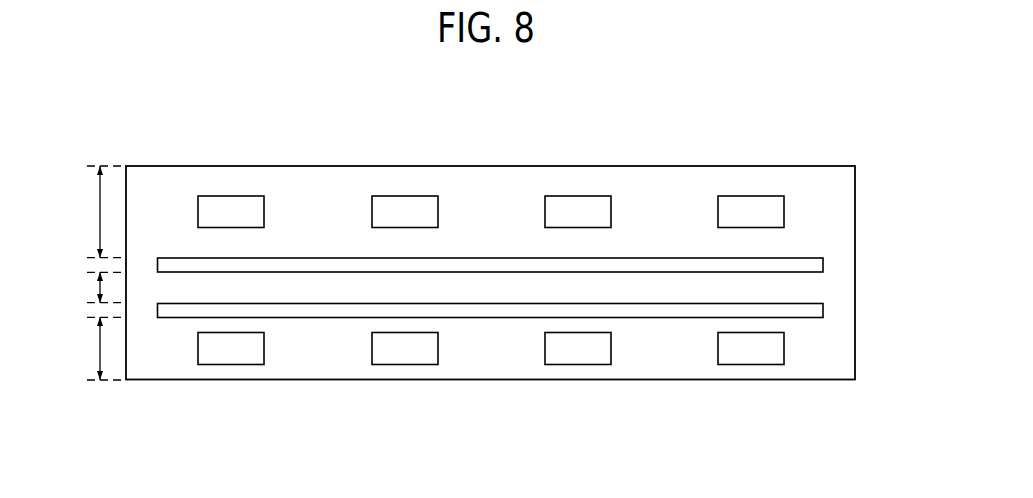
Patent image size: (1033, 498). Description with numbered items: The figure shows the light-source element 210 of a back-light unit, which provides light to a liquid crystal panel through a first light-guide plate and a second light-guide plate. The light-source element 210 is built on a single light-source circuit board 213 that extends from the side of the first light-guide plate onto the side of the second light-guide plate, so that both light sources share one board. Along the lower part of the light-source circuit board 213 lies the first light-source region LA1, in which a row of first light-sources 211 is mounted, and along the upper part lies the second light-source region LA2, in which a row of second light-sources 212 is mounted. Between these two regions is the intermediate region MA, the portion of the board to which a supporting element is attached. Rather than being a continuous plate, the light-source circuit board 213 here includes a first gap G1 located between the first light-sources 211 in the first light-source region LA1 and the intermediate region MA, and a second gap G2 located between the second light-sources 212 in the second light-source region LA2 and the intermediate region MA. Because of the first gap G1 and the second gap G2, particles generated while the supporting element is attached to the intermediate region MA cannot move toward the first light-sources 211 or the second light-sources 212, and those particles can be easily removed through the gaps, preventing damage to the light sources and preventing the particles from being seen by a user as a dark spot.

The light-source element 210 is at (505, 87).
The first light-source 211 is at (749, 378).
The second light-source 212 is at (750, 182).
The light-source circuit board 213 is at (844, 219).
The first gap G1 is at (831, 264).
The second gap G2 is at (831, 310).
The first light-source region LA1 is at (94, 348).
The second light-source region LA2 is at (94, 212).
The intermediate region MA is at (96, 287).